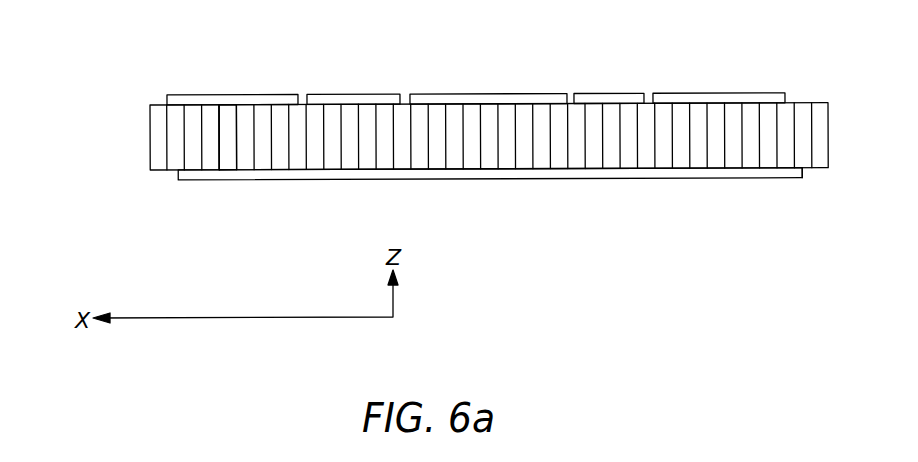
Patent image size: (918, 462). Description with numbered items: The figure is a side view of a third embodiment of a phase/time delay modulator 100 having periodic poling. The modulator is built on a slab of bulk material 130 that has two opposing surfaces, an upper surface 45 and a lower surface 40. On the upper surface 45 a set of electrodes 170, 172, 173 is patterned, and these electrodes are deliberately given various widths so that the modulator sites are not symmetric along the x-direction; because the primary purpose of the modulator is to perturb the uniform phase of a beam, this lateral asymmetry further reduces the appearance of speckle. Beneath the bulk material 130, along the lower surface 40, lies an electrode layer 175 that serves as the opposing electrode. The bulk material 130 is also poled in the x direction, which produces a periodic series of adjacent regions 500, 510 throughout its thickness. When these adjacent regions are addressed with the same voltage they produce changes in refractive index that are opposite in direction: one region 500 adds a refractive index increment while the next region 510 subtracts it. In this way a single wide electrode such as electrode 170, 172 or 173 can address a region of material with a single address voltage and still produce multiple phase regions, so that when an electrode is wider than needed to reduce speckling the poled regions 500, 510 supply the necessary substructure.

The transducer array assembly 100 is at (447, 136).
The bulk material 130 is at (150, 142).
The electrode 170 is at (242, 95).
The electrode 172 is at (333, 93).
The electrode 173 is at (503, 92).
The surface 45 is at (803, 100).
The surface 40 is at (818, 170).
The bottom electrode 175 is at (613, 178).
The poled region 500 is at (212, 155).
The poled region 510 is at (230, 150).